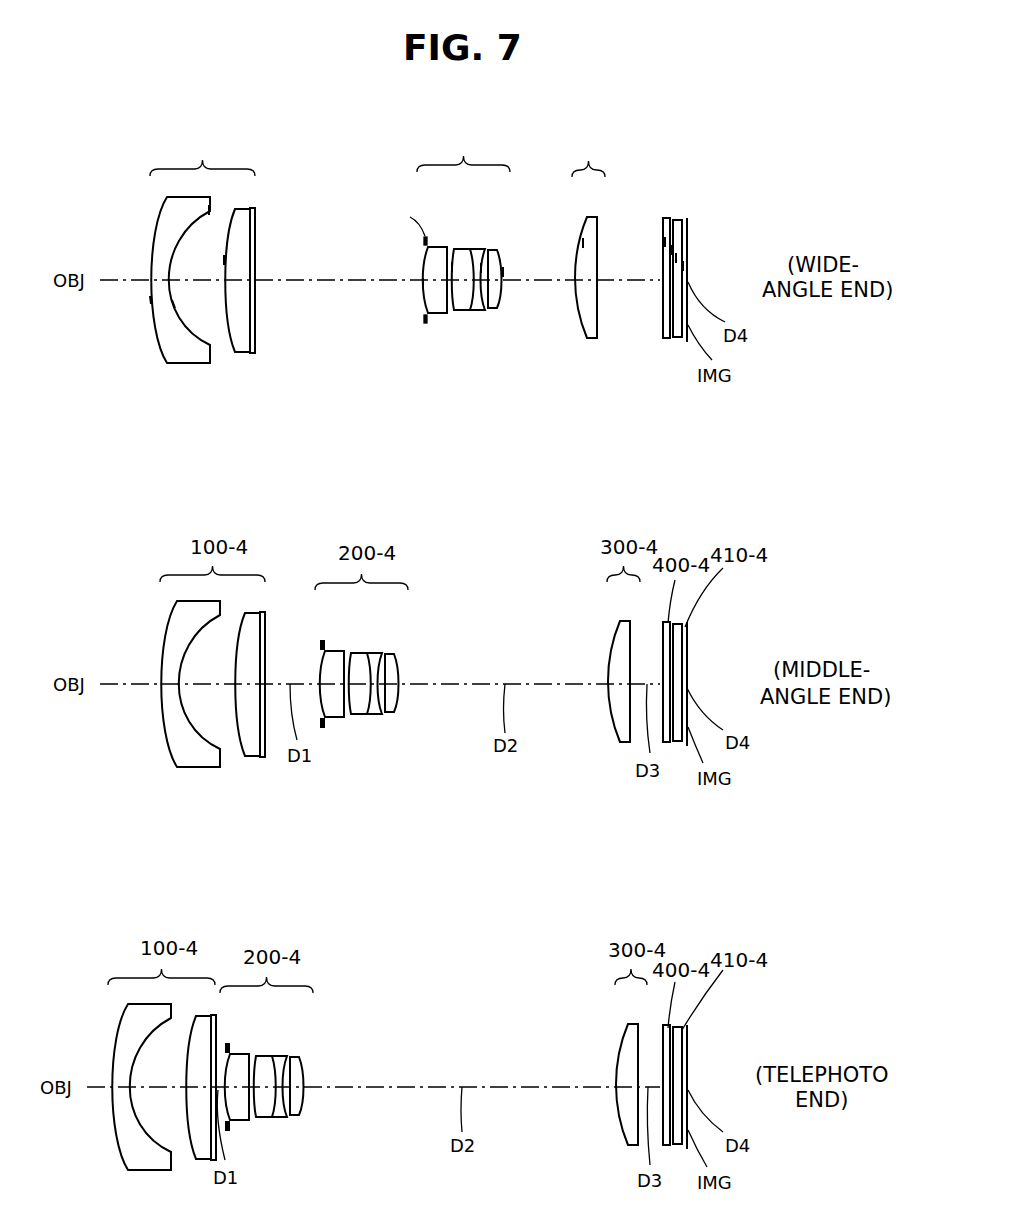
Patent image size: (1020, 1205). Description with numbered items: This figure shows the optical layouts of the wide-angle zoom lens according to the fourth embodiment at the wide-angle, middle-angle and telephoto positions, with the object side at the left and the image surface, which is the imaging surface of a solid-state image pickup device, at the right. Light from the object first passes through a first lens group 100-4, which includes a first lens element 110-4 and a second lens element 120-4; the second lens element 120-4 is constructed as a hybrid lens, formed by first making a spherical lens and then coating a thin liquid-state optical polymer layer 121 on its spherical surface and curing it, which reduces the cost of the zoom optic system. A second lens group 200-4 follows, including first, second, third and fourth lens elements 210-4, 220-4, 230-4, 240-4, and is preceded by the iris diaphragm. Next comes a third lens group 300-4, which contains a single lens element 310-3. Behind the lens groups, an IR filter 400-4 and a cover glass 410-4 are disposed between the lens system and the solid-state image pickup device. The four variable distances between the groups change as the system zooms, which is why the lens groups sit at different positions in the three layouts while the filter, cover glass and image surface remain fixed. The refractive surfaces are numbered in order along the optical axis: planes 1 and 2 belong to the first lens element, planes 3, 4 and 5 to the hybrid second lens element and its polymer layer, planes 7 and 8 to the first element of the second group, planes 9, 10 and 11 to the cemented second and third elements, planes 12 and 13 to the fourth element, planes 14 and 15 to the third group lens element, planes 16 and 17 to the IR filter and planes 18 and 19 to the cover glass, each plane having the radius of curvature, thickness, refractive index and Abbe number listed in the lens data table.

The first plane 1 is at (150, 298).
The second plane 2 is at (173, 305).
The third plane 3 is at (225, 261).
The fourth plane 4 is at (210, 211).
The fifth plane 5 is at (250, 240).
The seventh plane 7 is at (423, 283).
The eighth plane 8 is at (446, 285).
The ninth plane 9 is at (452, 267).
The tenth plane 10 is at (446, 255).
The eleventh plane 11 is at (482, 268).
The twelfth plane 12 is at (490, 258).
The thirteenth plane 13 is at (525, 263).
The fourteenth plane 14 is at (583, 243).
The fifteenth plane 15 is at (621, 254).
The sixteenth plane 16 is at (665, 242).
The seventeenth plane 17 is at (671, 250).
The eighteenth plane 18 is at (676, 258).
The nineteenth plane 19 is at (683, 266).
The first lens group 100-4 is at (198, 286).
The first lens element 110-4 is at (182, 357).
The second lens element 120-4 is at (237, 353).
The optical polymer layer 121 is at (251, 353).
The second lens group 200-4 is at (464, 271).
The first lens element of second lens group 210-4 is at (432, 313).
The second lens element of second lens group 220-4 is at (458, 311).
The third lens element of second lens group 230-4 is at (472, 311).
The fourth lens element of second lens group 240-4 is at (493, 309).
The third lens group 300-4 is at (606, 273).
The lens element of third lens group 310-3 is at (588, 338).
The IR filter 400-4 is at (667, 218).
The cover glass 410-4 is at (678, 220).